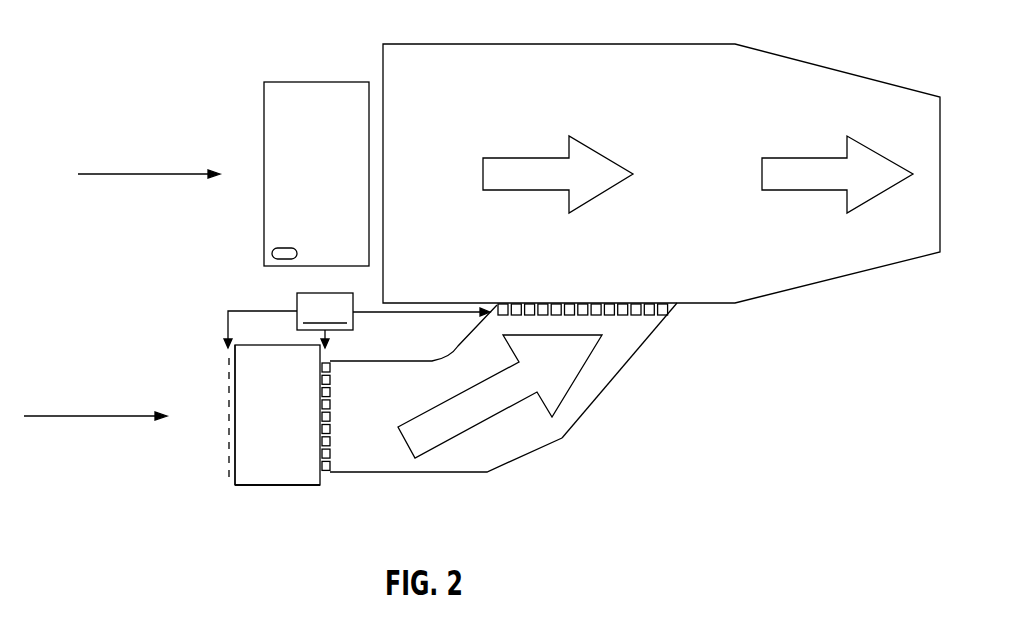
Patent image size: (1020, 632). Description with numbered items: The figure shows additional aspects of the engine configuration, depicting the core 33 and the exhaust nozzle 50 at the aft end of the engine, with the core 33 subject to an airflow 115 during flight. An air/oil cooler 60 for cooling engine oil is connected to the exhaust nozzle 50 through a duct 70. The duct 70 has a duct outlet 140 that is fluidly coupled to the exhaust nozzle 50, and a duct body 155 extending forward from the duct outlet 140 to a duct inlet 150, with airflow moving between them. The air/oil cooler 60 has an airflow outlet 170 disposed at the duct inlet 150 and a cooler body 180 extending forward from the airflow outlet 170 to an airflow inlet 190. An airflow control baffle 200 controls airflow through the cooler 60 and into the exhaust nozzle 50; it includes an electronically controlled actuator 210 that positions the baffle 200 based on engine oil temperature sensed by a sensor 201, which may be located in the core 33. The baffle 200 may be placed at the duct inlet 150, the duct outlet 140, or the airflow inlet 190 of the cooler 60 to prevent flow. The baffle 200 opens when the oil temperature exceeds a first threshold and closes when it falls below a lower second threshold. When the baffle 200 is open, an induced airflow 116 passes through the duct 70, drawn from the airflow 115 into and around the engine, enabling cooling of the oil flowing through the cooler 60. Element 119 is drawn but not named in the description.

The core 33 is at (316, 80).
The exhaust nozzle 50 is at (565, 58).
The air/oil cooler 60 is at (238, 488).
The duct 70 is at (560, 438).
The airflow 115 is at (128, 176).
The induced airflow 116 is at (487, 423).
The outlet flow 119 is at (805, 158).
The duct outlet 140 is at (678, 305).
The duct inlet 150 is at (332, 423).
The duct body 155 is at (588, 415).
The airflow outlet 170 is at (318, 488).
The cooler body 180 is at (252, 488).
The airflow inlet 190 is at (233, 480).
The airflow control baffle 200 is at (227, 410).
The sensor 201 is at (272, 253).
The electronically controlled actuator 210 is at (357, 320).